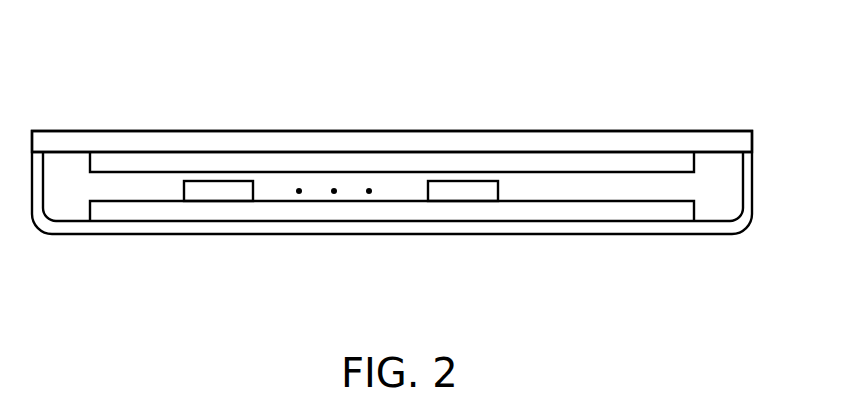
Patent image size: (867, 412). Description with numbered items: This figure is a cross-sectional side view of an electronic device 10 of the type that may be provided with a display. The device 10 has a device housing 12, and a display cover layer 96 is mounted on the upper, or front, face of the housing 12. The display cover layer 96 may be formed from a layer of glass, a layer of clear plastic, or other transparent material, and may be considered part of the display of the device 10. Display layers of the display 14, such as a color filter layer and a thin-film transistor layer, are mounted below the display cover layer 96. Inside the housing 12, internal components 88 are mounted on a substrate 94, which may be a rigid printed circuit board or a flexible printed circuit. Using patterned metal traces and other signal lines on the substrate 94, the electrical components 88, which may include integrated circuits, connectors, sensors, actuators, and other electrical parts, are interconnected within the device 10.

The electronic device 10 is at (440, 156).
The device housing 12 is at (752, 190).
The display 14 is at (443, 163).
The internal components 88 is at (235, 192).
The substrate 94 is at (143, 214).
The display cover layer 96 is at (345, 142).